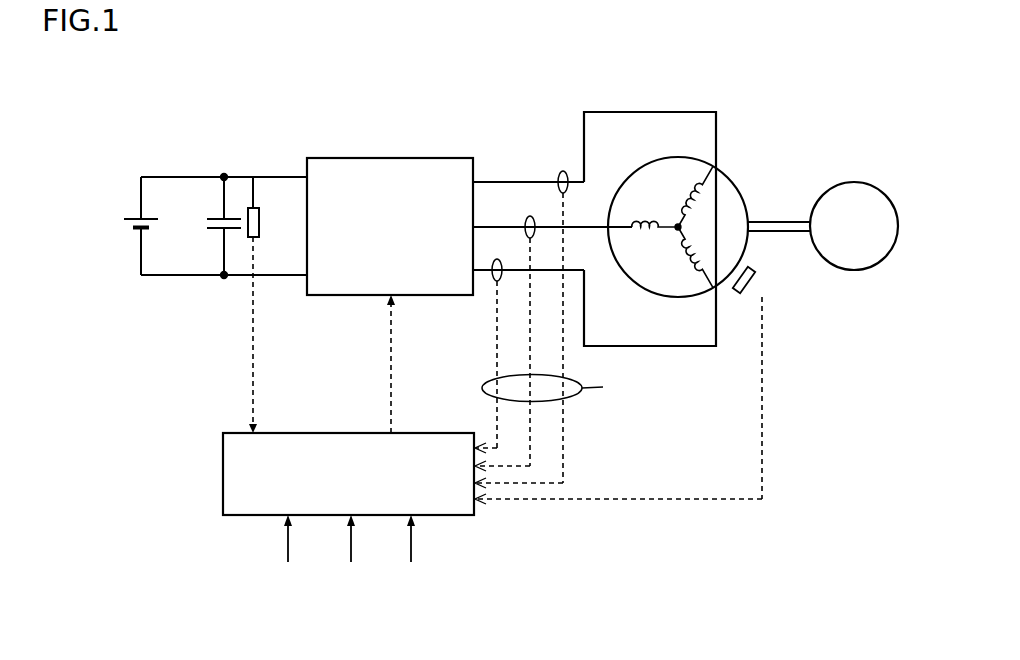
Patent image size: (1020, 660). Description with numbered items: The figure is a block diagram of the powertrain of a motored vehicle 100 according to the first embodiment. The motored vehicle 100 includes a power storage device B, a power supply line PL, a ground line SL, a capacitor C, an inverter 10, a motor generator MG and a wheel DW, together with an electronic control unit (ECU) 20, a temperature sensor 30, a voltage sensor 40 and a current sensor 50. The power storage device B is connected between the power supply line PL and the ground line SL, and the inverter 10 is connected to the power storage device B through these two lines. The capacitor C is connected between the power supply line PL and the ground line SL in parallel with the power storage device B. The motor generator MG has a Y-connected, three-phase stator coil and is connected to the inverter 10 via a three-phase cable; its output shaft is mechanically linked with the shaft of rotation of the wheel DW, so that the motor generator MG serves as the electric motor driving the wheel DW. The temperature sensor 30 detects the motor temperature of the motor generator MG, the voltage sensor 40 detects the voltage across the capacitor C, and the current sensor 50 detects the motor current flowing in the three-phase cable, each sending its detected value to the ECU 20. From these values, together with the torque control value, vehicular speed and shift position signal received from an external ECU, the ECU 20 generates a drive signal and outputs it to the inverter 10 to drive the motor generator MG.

The motored vehicle 100 is at (128, 87).
The inverter 10 is at (445, 158).
The electronic control unit (ECU) 20 is at (223, 475).
The temperature sensor 30 is at (752, 283).
The voltage sensor 40 is at (253, 200).
The current sensor 50 is at (497, 259).
The power storage device B is at (124, 216).
The capacitor C is at (212, 215).
The power supply line PL is at (185, 175).
The ground line SL is at (185, 282).
The motor generator MG is at (736, 186).
The wheel DW is at (849, 182).